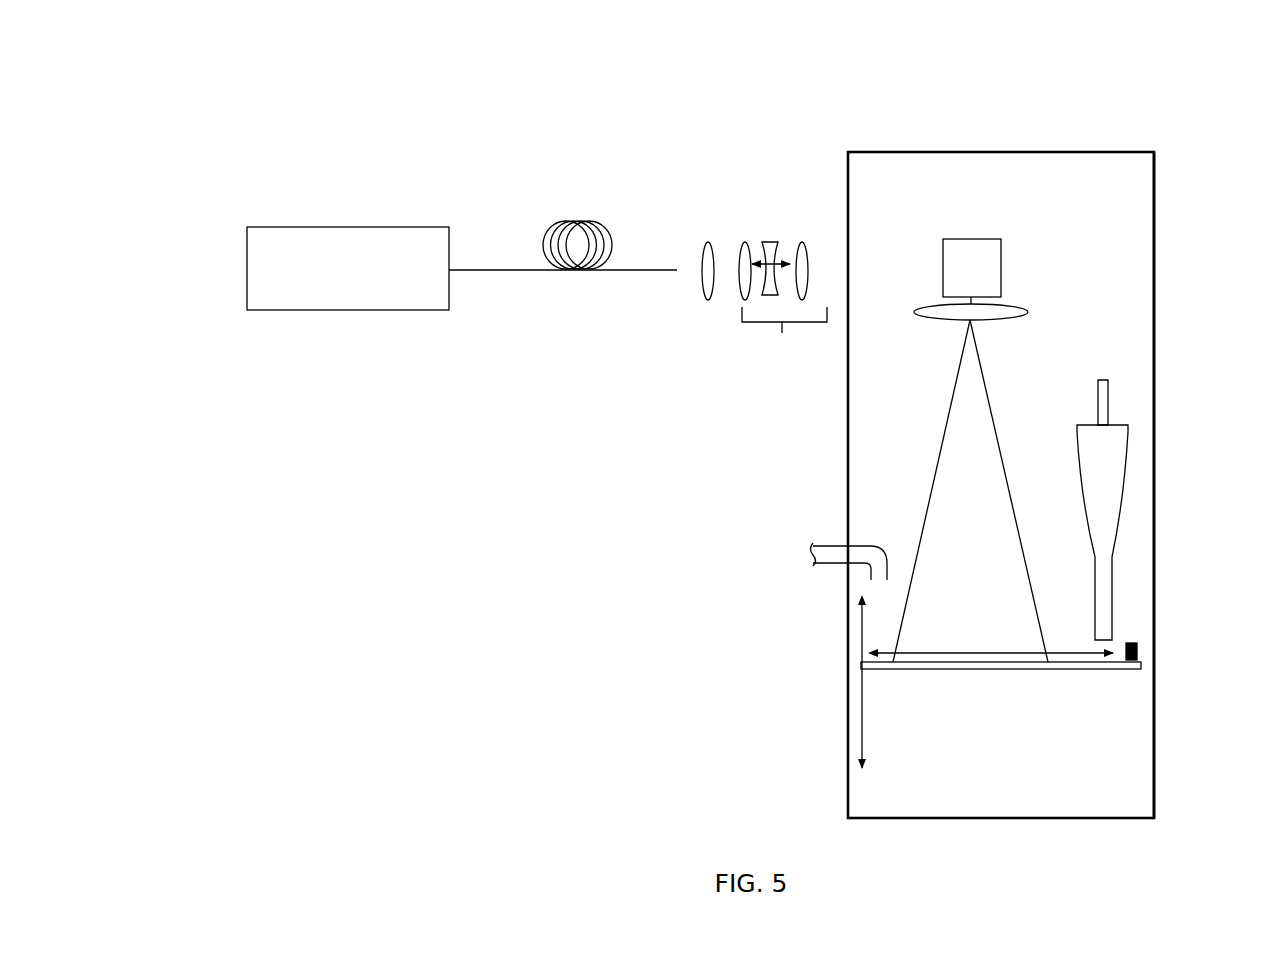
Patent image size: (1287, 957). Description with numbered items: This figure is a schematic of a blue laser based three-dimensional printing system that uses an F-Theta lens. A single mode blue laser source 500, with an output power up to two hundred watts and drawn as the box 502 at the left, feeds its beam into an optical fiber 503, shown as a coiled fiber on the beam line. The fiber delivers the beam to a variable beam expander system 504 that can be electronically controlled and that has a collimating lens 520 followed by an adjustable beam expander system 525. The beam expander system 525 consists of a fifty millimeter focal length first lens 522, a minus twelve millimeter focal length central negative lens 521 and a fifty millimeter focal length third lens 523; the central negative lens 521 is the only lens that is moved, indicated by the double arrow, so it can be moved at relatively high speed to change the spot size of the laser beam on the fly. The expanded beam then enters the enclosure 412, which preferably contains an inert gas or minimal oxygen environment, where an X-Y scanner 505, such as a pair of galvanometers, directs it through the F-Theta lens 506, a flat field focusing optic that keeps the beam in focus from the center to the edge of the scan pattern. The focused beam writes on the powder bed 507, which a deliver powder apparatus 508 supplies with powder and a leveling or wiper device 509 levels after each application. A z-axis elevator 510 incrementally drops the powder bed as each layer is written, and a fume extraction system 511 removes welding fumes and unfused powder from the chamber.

The single mode blue laser source 500 is at (770, 95).
The laser source 502 is at (354, 227).
The optical fiber 503 is at (575, 221).
The variable beam expander system 504 is at (862, 135).
The X-Y scanner 505 is at (971, 239).
The F-Theta lens 506 is at (1018, 305).
The powder bed 507 is at (1092, 665).
The deliver powder apparatus 508 is at (1128, 452).
The leveling or wiper device 509 is at (1137, 648).
The z-axis elevator 510 is at (862, 677).
The fume extraction system 511 is at (835, 546).
The enclosure 412 is at (1154, 198).
The collimating lens 520 is at (708, 243).
The central negative lens 521 is at (770, 242).
The first lens 522 is at (745, 243).
The third lens 523 is at (802, 243).
The beam expander system 525 is at (700, 335).